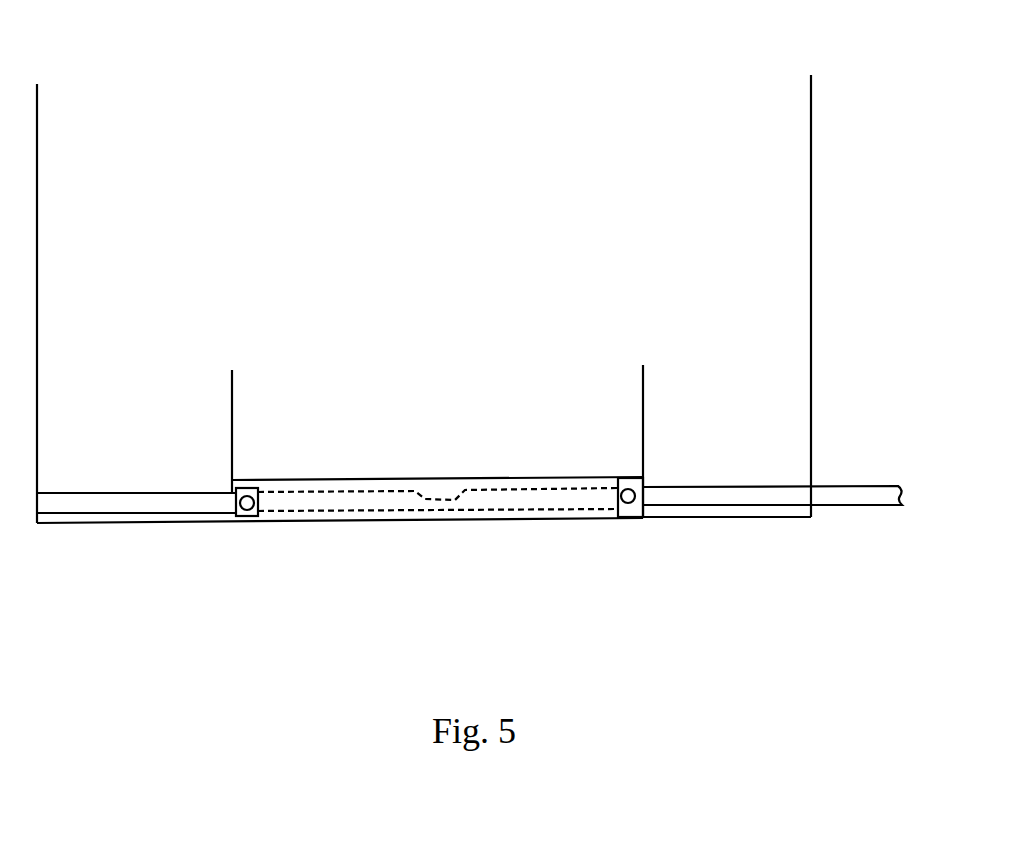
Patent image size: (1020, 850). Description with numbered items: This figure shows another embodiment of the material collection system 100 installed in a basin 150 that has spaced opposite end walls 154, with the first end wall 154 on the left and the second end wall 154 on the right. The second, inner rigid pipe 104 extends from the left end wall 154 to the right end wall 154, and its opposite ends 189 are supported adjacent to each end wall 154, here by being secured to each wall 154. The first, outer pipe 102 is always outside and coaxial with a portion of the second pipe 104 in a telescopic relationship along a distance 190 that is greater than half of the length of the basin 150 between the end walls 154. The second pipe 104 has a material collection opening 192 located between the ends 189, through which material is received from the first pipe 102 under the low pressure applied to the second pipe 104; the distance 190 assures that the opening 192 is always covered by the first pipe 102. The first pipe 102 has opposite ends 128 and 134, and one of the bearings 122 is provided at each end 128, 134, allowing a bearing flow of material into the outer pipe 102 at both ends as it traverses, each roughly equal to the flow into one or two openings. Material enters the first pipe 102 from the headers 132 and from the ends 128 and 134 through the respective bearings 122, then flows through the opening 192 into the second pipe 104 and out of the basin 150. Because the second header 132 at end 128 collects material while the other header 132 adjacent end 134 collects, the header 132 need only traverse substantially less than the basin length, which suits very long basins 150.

The system 100 is at (232, 55).
The basin 150 is at (40, 118).
The end walls 154 is at (38, 228).
The second pipe 104 is at (67, 505).
The opposite ends 189 is at (42, 492).
The first pipe 102 is at (338, 485).
The material collection opening 192 is at (447, 478).
The end of first pipe 134 is at (232, 478).
The end of first pipe 128 is at (640, 490).
The headers 132 is at (240, 503).
The bearings 122 is at (240, 525).
The distance 190 is at (641, 375).